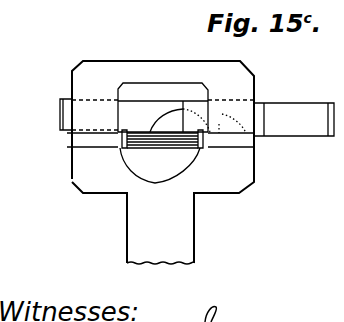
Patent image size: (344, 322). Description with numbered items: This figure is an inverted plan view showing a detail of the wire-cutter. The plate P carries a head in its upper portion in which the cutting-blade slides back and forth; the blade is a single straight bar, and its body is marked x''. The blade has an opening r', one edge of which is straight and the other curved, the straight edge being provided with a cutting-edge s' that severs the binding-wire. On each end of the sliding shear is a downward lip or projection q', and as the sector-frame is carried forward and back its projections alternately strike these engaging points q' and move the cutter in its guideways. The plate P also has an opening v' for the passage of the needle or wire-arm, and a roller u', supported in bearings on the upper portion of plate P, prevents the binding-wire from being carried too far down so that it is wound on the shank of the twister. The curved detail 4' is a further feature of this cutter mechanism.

The casing body x'' is at (163, 162).
The shaft q' is at (193, 117).
The sliding bar u' is at (160, 146).
The lower cam piece v' is at (160, 165).
The pawl arc 4' is at (166, 120).
The dotted arc path s' is at (202, 121).
The dotted arc path r' is at (234, 124).
The stem P is at (160, 228).